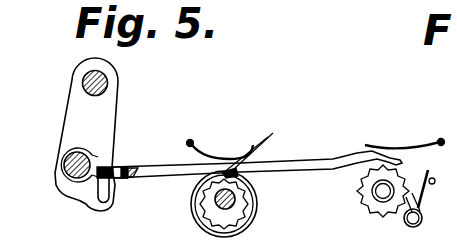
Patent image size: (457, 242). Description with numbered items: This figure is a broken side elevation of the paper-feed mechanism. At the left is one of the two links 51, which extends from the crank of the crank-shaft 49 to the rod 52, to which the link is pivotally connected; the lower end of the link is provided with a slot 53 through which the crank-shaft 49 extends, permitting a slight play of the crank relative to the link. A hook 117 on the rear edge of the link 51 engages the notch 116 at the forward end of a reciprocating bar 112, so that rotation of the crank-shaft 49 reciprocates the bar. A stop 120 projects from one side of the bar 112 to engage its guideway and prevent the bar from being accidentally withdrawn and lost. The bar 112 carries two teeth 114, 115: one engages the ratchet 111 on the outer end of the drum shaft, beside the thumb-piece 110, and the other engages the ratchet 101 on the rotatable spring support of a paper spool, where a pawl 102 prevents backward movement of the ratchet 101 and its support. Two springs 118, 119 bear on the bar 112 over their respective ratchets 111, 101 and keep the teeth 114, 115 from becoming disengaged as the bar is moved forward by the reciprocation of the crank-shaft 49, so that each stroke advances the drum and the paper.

The crank-shaft 49 is at (62, 169).
The link 51 is at (111, 122).
The rod 52 is at (107, 85).
The slot 53 is at (79, 148).
The ratchet 101 is at (361, 198).
The pawl 102 is at (422, 212).
The thumb-piece 110 is at (253, 225).
The ratchet 111 is at (262, 195).
The reciprocating bar 112 is at (257, 162).
The tooth 114 is at (255, 154).
The tooth 115 is at (400, 159).
The notch 116 is at (114, 166).
The hook 117 is at (118, 200).
The spring 118 is at (217, 155).
The spring 119 is at (397, 145).
The stop 120 is at (151, 160).